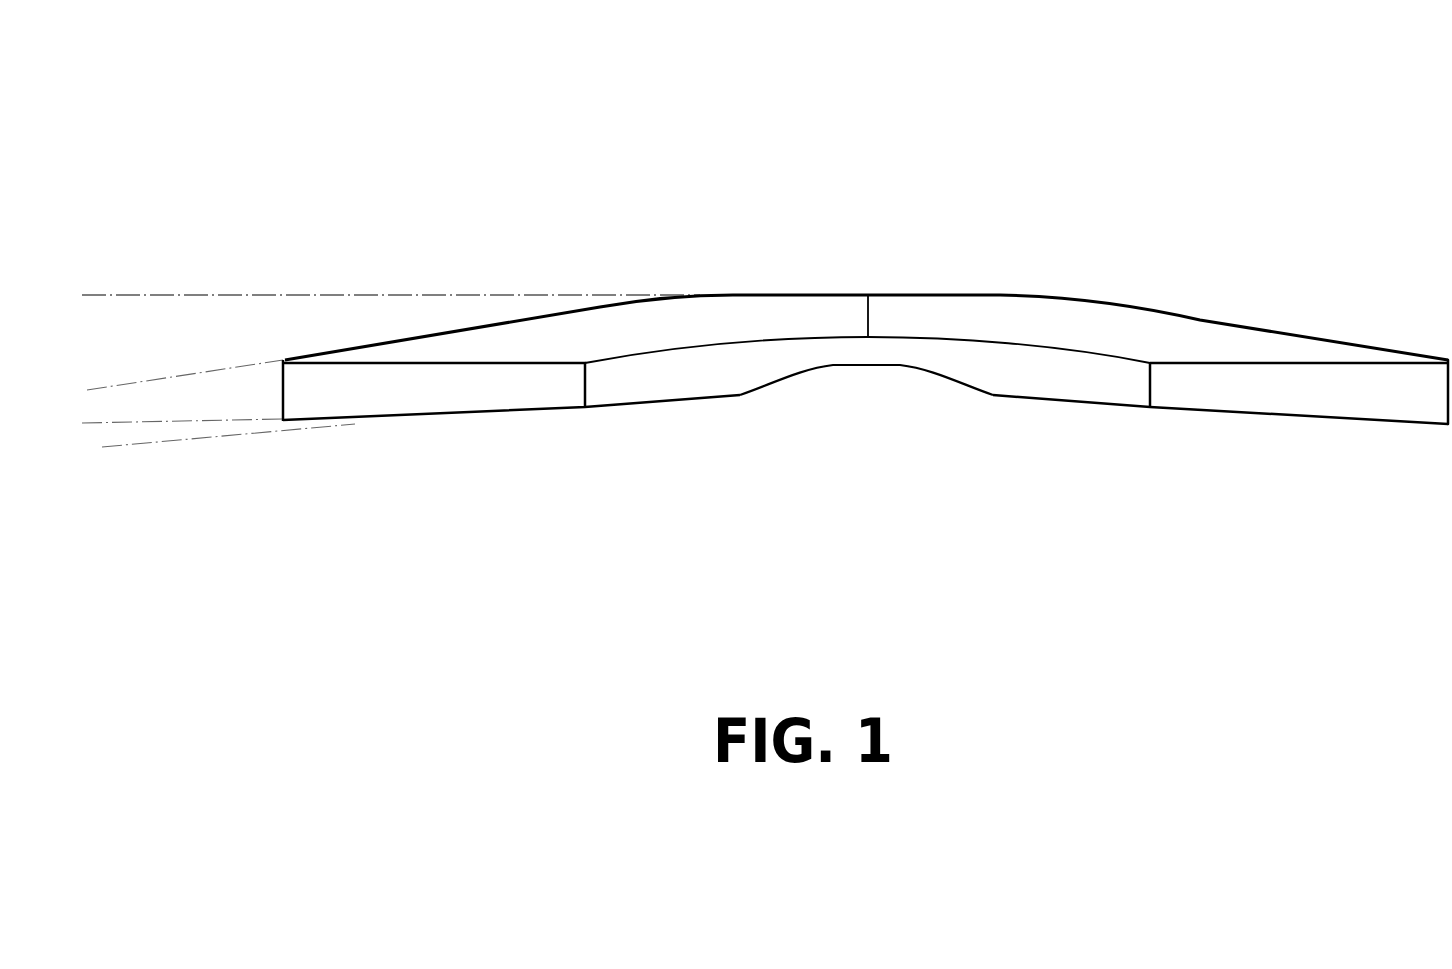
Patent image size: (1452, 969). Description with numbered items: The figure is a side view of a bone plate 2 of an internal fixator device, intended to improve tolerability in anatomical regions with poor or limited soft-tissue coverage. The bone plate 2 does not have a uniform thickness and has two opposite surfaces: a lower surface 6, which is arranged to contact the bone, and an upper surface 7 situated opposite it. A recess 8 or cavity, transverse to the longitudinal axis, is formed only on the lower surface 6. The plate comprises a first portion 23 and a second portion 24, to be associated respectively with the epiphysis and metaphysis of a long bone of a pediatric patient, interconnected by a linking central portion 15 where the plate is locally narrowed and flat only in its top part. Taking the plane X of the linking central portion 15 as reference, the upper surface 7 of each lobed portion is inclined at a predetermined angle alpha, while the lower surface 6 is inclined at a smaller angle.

The bone plate 2 is at (1130, 207).
The lower surface 6 is at (687, 409).
The upper surface 7 is at (552, 302).
The recess 8 is at (886, 386).
The linking central portion 15 is at (850, 290).
The first portion 23 is at (462, 357).
The second portion 24 is at (1303, 357).